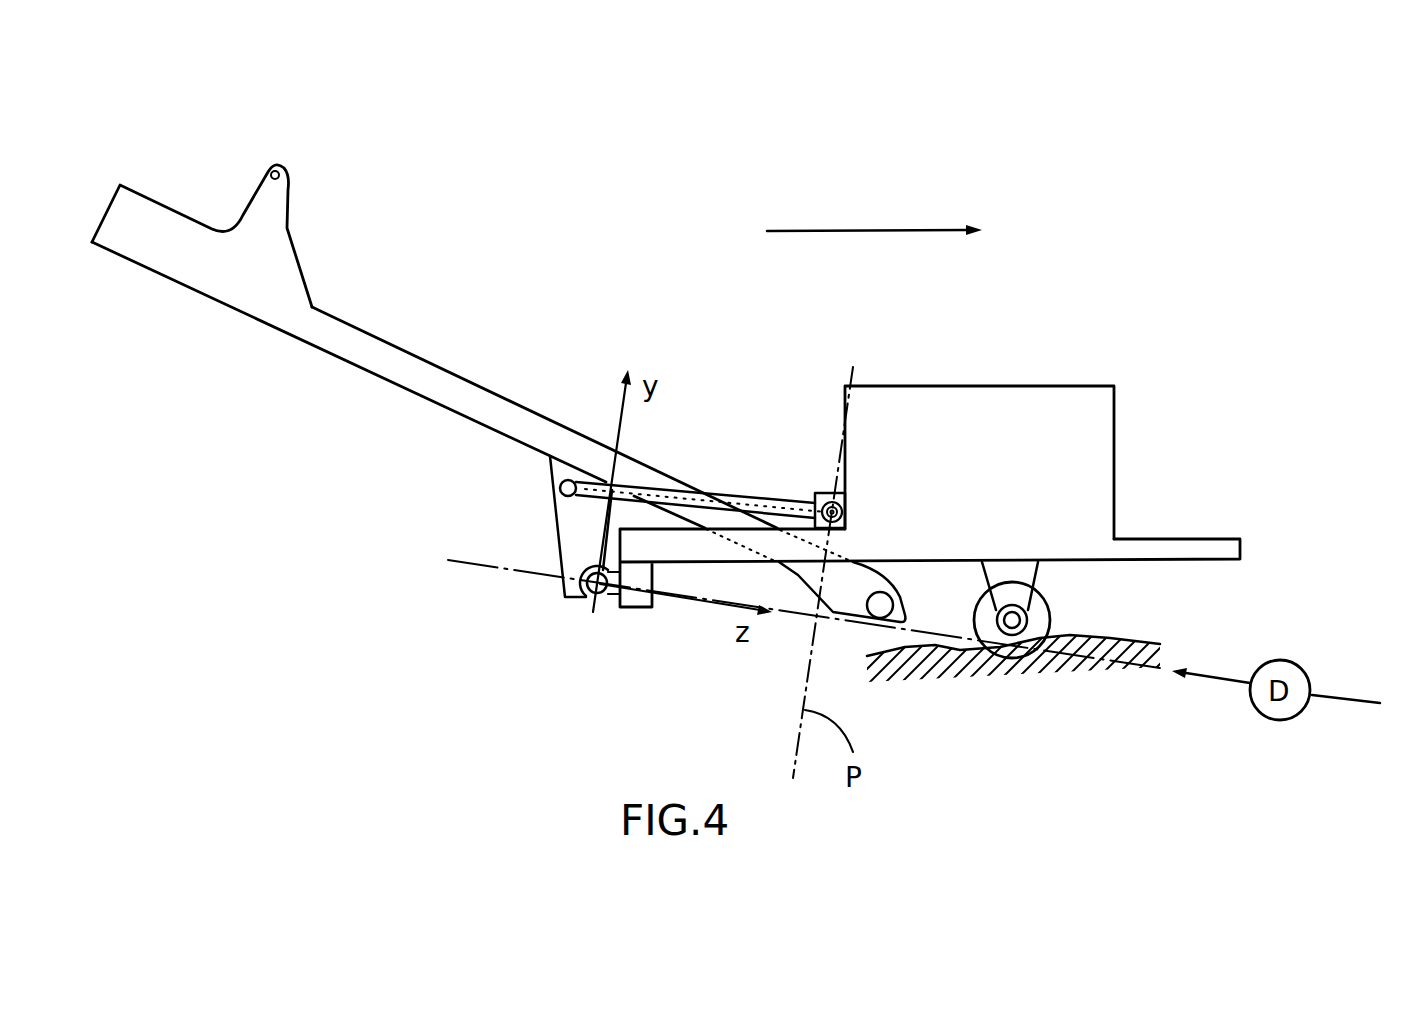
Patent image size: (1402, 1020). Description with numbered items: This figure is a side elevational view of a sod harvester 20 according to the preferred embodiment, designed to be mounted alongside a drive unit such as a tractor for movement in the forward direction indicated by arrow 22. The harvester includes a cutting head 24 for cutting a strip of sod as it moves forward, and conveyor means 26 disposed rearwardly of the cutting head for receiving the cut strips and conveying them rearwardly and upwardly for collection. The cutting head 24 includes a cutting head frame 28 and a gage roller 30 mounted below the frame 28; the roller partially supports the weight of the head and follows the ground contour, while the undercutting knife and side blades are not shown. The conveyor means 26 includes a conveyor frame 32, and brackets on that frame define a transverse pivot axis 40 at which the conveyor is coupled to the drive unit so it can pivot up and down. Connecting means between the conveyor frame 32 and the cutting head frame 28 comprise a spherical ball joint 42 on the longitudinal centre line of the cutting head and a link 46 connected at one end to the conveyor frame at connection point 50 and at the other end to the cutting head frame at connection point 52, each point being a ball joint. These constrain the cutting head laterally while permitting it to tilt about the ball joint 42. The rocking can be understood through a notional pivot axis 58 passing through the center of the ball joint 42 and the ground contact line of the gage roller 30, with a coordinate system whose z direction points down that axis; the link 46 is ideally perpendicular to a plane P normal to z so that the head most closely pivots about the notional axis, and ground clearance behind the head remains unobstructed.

The sod harvester 20 is at (542, 257).
The forward direction arrow 22 is at (843, 230).
The cutting head 24 is at (1013, 383).
The conveyor means 26 is at (498, 354).
The cutting head frame 28 is at (1175, 538).
The gage roller 30 is at (1040, 618).
The conveyor frame 32 is at (482, 398).
The transverse pivot axis 40 is at (278, 168).
The spherical ball joint 42 is at (594, 597).
The link 46 is at (750, 503).
The connection point 50 is at (560, 488).
The connection point 52 is at (845, 513).
The notional pivot axis 58 is at (502, 570).